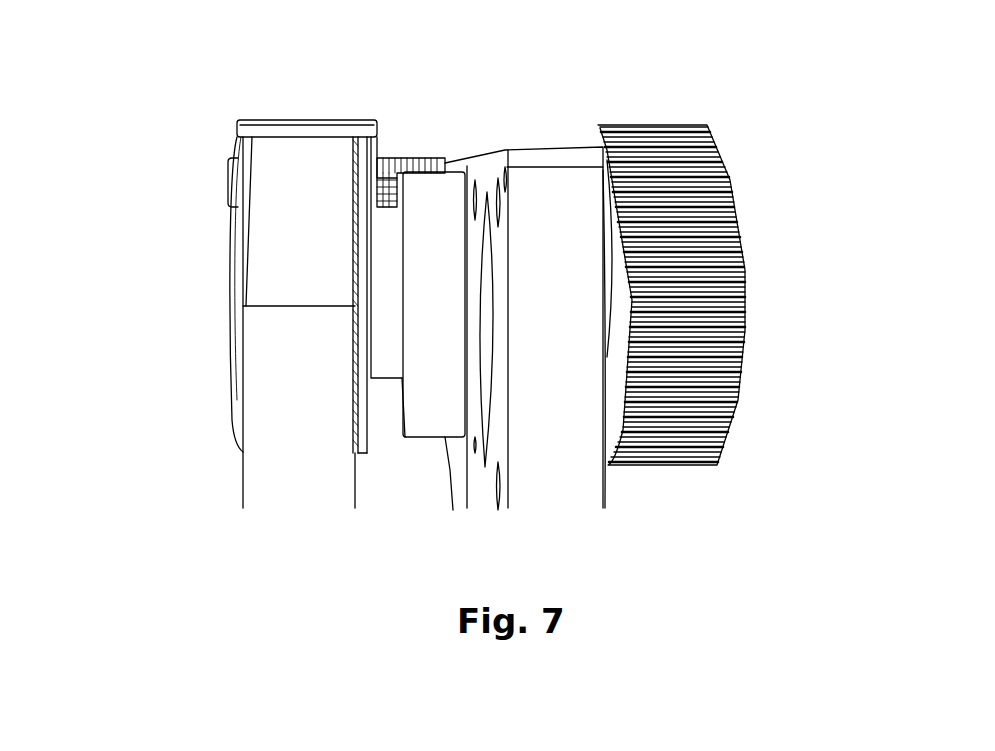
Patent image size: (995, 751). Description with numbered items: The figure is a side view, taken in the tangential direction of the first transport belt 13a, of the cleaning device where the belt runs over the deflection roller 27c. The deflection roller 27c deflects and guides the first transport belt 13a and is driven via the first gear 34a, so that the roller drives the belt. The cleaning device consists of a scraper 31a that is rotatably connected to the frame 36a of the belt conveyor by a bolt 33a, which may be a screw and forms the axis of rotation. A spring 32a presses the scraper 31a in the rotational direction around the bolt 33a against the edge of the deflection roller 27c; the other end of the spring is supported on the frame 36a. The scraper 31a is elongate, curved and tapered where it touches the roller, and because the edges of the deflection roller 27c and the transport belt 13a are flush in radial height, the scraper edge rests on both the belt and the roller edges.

The first transport belt 13a is at (302, 465).
The scraper 31a is at (305, 125).
The spring 32a is at (400, 163).
The bolt 33a is at (230, 167).
The deflection roller 27c is at (240, 258).
The frame 36a is at (545, 217).
The first gear 34a is at (680, 230).